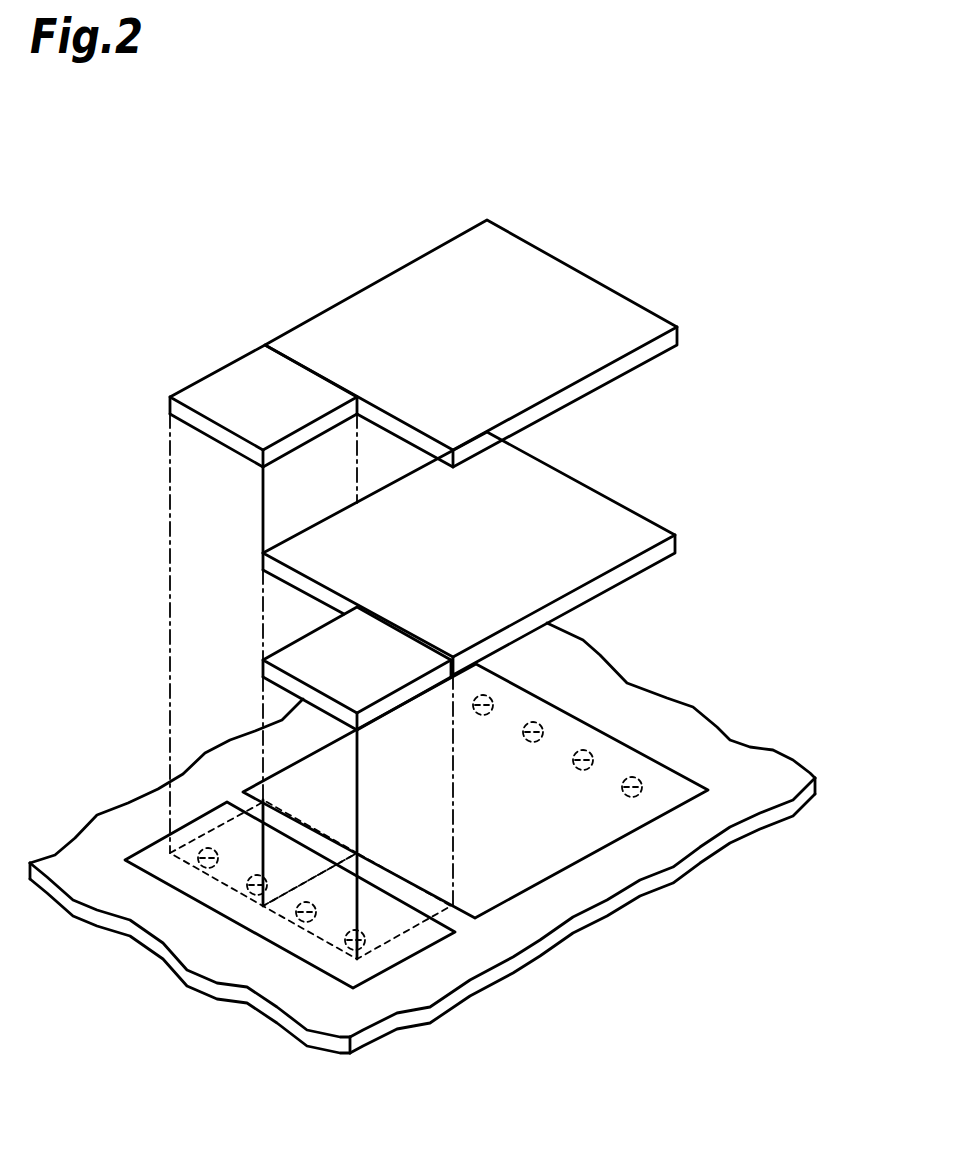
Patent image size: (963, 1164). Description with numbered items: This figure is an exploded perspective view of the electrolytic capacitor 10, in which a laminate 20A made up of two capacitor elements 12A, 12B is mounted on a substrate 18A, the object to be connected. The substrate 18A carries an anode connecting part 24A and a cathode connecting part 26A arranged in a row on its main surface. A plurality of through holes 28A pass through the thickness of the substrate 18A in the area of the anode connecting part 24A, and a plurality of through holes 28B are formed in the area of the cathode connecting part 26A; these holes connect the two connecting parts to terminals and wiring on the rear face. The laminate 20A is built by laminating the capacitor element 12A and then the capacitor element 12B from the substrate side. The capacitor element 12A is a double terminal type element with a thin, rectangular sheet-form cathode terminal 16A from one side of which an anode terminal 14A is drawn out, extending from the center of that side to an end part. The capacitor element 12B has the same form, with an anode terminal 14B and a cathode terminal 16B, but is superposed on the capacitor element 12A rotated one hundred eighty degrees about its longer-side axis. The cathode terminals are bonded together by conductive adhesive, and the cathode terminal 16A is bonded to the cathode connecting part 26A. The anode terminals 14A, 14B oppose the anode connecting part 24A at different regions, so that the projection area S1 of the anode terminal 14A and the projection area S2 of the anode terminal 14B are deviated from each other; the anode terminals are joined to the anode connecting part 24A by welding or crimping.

The electrolytic capacitor 10 is at (260, 245).
The capacitor element 12A is at (677, 507).
The capacitor element 12B is at (678, 312).
The anode terminal 14A is at (307, 667).
The anode terminal 14B is at (217, 388).
The cathode terminal 16A is at (577, 500).
The cathode terminal 16B is at (562, 278).
The substrate 18A is at (750, 758).
The laminate 20A is at (767, 253).
The anode connecting part 24A is at (402, 947).
The cathode connecting part 26A is at (603, 830).
The through holes 28A is at (203, 847).
The through holes 28B is at (632, 773).
The projection area S1 is at (303, 928).
The projection area S2 is at (207, 885).